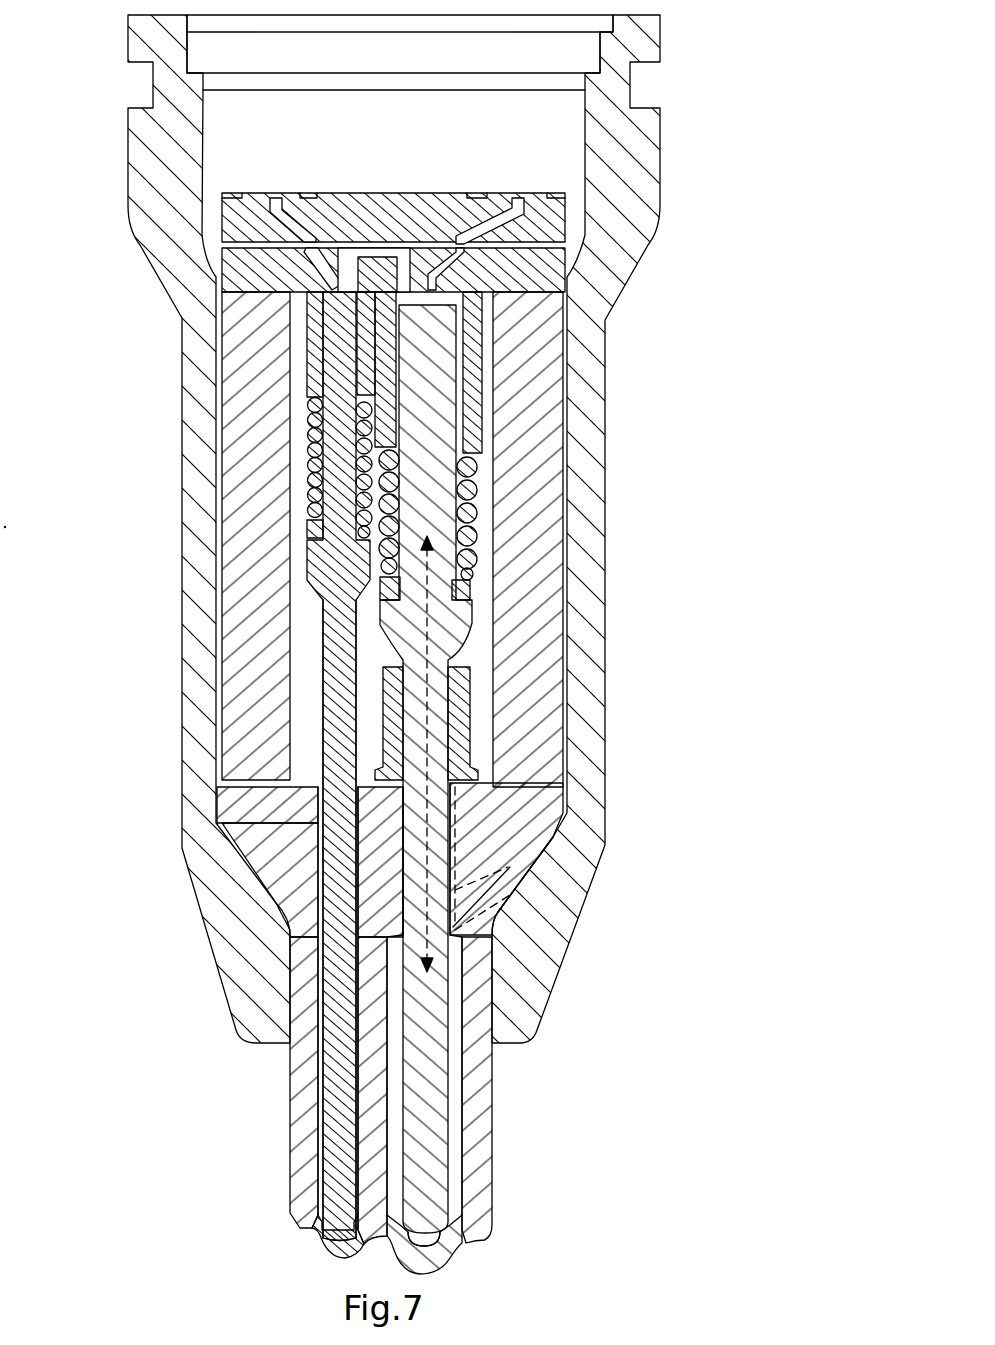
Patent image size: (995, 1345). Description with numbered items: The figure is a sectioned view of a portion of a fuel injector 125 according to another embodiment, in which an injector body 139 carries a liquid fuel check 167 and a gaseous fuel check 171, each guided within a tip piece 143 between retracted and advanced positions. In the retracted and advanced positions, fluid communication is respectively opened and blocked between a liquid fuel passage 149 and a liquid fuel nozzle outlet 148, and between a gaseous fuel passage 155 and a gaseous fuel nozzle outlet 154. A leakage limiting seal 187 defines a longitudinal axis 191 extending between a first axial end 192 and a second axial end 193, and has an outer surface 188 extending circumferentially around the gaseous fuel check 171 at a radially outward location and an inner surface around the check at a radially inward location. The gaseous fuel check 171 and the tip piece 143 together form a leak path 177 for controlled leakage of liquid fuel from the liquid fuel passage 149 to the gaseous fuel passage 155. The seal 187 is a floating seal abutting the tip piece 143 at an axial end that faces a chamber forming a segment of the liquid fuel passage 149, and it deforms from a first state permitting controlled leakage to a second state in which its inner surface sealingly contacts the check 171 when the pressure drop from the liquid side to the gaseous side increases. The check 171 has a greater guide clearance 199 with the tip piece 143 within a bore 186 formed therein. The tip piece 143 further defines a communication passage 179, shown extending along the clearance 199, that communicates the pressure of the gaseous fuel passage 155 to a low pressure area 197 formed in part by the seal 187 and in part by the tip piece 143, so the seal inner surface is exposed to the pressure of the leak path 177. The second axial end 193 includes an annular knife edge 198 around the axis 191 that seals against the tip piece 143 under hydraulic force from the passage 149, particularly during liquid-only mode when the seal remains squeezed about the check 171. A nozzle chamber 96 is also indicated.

The fuel injector 125 is at (84, 118).
The injector body 139 is at (212, 450).
The liquid fuel passage 149 is at (300, 602).
The longitudinal axis 191 is at (378, 618).
The knife edge 198 is at (355, 815).
The low pressure area 197 is at (395, 790).
The clearance 199 is at (403, 905).
The bore 186 is at (357, 977).
The liquid fuel check 167 is at (330, 1125).
The liquid fuel nozzle outlet 148 is at (322, 1237).
The gaseous fuel nozzle outlet 154 is at (460, 1237).
The tip piece 143 is at (480, 1193).
The gaseous fuel check 171 is at (430, 1150).
The nozzle chamber 96 is at (455, 1107).
The gaseous fuel passage 155 is at (510, 980).
The communication passage 179 is at (513, 893).
The second axial end 193 is at (463, 790).
The outer surface 188 is at (480, 750).
The leakage limiting seal 187 is at (473, 720).
The leak path 177 is at (473, 680).
The first axial end 192 is at (452, 665).